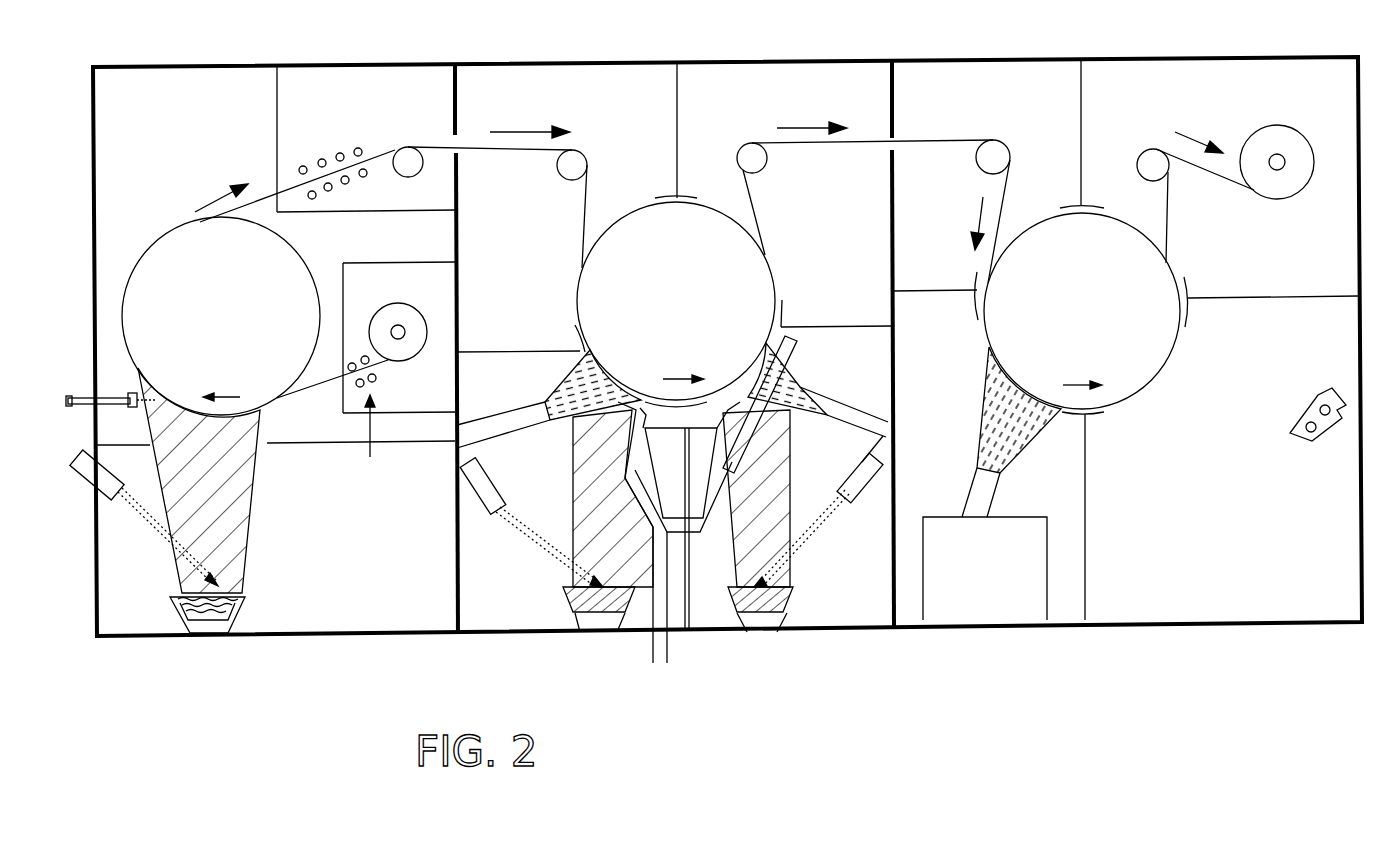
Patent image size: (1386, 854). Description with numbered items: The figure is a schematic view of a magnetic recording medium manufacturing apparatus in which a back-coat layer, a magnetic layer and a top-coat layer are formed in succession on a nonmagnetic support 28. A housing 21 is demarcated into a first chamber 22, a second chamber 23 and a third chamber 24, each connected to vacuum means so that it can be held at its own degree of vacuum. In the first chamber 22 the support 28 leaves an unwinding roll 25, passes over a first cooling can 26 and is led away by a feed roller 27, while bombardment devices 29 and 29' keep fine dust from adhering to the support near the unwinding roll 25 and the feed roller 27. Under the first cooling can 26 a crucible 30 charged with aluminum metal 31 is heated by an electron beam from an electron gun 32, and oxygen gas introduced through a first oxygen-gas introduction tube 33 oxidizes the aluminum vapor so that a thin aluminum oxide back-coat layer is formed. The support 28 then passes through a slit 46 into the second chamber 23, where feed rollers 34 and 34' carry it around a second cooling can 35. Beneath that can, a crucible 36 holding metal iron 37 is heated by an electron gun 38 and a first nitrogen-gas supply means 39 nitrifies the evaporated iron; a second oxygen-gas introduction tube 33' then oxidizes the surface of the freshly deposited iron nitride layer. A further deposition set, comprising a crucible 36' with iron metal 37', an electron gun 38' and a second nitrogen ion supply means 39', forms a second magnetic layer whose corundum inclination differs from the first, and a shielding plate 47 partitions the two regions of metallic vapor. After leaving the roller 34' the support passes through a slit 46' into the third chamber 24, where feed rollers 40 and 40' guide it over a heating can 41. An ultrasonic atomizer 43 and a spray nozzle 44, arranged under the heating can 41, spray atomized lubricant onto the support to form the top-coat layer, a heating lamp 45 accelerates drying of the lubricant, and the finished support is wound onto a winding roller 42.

The housing 21 is at (207, 58).
The first chamber 22 is at (352, 622).
The second chamber 23 is at (823, 618).
The third chamber 24 is at (1148, 598).
The unwinding roll 25 is at (400, 312).
The first cooling can 26 is at (293, 276).
The feed roller 27 is at (407, 153).
The nonmagnetic support 28 is at (308, 393).
The bombardment device 29 is at (367, 423).
The bombardment device 29' is at (332, 155).
The crucible 30 is at (242, 612).
The aluminum metal 31 is at (245, 597).
The electron gun 32 is at (85, 478).
The first oxygen-gas introduction tube 33 is at (102, 377).
The second oxygen-gas introduction tube 33' is at (679, 515).
The feed roller 34 is at (594, 140).
The feed roller 34' is at (738, 136).
The second cooling can 35 is at (627, 242).
The crucible 36 is at (571, 609).
The crucible 36' is at (805, 591).
The metal iron 37 is at (580, 500).
The iron metal 37' is at (790, 498).
The electron gun 38 is at (531, 522).
The electron gun 38' is at (818, 511).
The first nitrogen-gas supply means 39 is at (549, 399).
The second nitrogen ion supply means 39' is at (818, 390).
The feed roller 40 is at (1015, 142).
The feed roller 40' is at (1144, 148).
The heating can 41 is at (1145, 375).
The winding roller 42 is at (1280, 152).
The ultrasonic atomizer 43 is at (1037, 555).
The spray nozzle 44 is at (995, 489).
The heating lamp 45 is at (1300, 447).
The slit 46 is at (514, 167).
The slit 46' is at (880, 186).
The shielding plate 47 is at (693, 602).